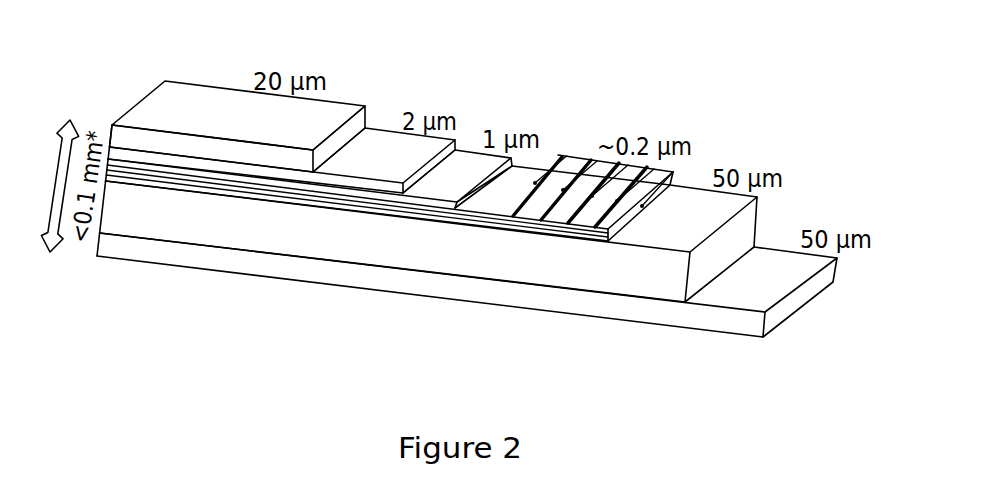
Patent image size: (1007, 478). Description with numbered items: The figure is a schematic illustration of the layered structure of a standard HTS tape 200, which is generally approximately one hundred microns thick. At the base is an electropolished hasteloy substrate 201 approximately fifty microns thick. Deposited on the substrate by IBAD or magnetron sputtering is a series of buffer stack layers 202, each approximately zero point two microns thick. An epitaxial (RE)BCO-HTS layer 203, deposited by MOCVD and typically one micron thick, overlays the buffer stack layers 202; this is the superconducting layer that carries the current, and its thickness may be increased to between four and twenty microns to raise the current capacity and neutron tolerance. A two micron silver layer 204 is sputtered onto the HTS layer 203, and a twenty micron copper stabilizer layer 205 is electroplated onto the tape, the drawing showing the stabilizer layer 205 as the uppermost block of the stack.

The HTS tape 200 is at (291, 307).
The hasteloy substrate 201 is at (703, 220).
The buffer stack layers 202 is at (588, 173).
The (RE)BCO-HTS layer 203 is at (475, 173).
The silver layer 204 is at (393, 150).
The copper stabilizer layer 205 is at (245, 113).